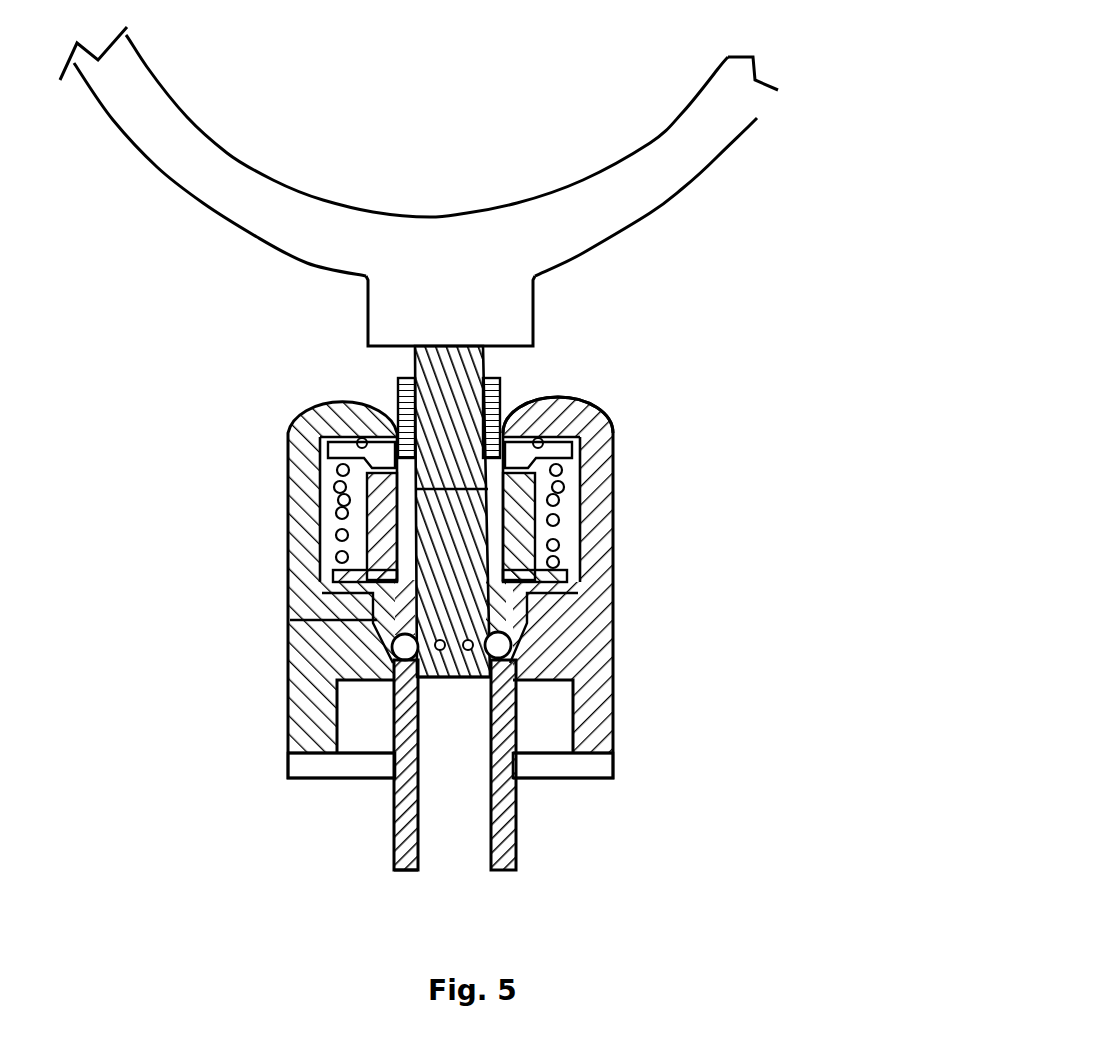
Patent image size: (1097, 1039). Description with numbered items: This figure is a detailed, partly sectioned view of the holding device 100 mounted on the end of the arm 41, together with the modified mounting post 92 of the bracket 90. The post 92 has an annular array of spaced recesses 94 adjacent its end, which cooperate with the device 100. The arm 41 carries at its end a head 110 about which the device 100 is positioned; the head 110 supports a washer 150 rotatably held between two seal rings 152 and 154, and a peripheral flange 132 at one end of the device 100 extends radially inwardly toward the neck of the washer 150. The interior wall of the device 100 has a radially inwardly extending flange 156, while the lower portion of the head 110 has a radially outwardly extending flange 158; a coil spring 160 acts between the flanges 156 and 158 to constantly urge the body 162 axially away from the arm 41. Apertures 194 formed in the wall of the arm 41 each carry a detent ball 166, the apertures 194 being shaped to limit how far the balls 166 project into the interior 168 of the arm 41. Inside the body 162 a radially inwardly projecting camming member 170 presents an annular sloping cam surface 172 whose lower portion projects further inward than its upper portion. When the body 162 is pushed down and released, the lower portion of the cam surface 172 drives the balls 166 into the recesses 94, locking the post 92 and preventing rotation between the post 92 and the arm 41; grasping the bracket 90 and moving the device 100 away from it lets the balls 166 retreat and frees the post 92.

The bracket 90 is at (685, 187).
The mounting post 92 is at (487, 351).
The recesses 94 is at (520, 657).
The holding device 100 is at (875, 420).
The head 110 is at (613, 543).
The peripheral flange 132 is at (575, 410).
The washer 150 is at (398, 382).
The seal ring 152 is at (292, 430).
The seal ring 154 is at (335, 480).
The radially inwardly extending flange 156 is at (333, 506).
The radially outwardly extending flange 158 is at (575, 582).
The coil spring 160 is at (540, 493).
The body 162 is at (295, 680).
The detent ball 166 is at (392, 650).
The camming member 170 is at (520, 640).
The cam surface 172 is at (290, 620).
The interior of the arm 168 is at (473, 860).
The apertures 194 is at (417, 680).
The arm 41 is at (516, 830).